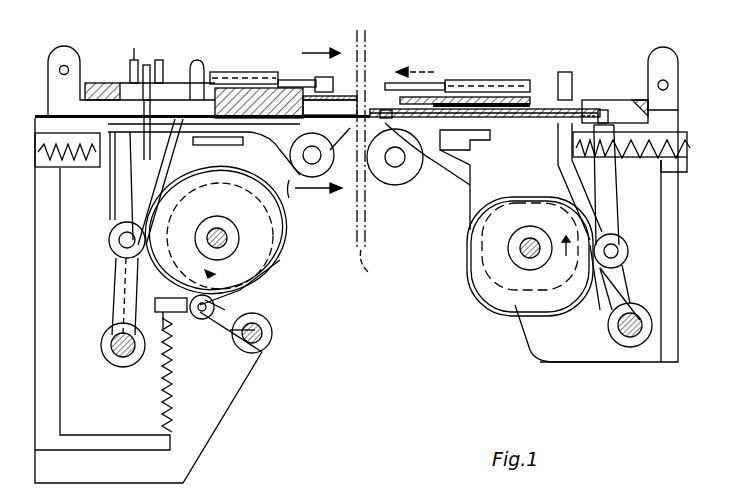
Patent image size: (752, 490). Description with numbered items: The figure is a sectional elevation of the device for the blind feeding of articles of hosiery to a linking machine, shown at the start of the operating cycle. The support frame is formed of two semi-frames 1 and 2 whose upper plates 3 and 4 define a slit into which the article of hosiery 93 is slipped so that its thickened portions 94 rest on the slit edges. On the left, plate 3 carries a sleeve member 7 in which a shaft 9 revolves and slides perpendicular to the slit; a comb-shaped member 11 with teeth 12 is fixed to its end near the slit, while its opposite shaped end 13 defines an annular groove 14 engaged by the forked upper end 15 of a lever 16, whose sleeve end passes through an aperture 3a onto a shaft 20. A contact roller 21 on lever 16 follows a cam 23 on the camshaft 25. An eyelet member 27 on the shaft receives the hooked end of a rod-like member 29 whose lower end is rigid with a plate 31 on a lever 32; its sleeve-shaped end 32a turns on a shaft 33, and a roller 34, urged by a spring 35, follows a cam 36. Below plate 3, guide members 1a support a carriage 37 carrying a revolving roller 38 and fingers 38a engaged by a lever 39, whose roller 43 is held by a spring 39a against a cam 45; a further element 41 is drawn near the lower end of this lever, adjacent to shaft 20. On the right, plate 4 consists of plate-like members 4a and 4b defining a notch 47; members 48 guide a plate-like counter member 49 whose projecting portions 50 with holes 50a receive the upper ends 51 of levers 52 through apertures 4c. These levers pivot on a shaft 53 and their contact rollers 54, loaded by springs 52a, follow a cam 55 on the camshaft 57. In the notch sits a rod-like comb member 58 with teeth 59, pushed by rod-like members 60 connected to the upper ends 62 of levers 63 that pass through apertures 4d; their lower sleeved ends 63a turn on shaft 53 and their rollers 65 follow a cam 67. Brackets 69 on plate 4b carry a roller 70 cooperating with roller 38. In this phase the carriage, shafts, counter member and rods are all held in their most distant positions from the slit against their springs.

The semi-frame 1 is at (205, 454).
The guide member 1a is at (238, 146).
The semi-frame 2 is at (520, 342).
The upper plate 3 is at (245, 90).
The aperture 3a is at (122, 90).
The upper plate 4 is at (530, 70).
The plate-like member 4a is at (465, 96).
The plate-like member 4b is at (478, 142).
The aperture 4c is at (634, 72).
The aperture 4d is at (622, 124).
The sleeve member 7 is at (236, 72).
The shaft 9 is at (295, 80).
The comb-shaped member 11 is at (326, 40).
The teeth 12 is at (336, 80).
The shaped end 13 is at (132, 60).
The annular groove 14 is at (146, 65).
The forked upper end 15 is at (162, 66).
The lever 16 is at (140, 158).
The shaft 20 is at (118, 360).
The revolving contact roller 21 is at (108, 242).
The cam 23 is at (167, 170).
The camshaft 25 is at (227, 232).
The eyelet member 27 is at (200, 62).
The rod-like member 29 is at (200, 146).
The plate 31 is at (190, 316).
The lever 32 is at (255, 303).
The sleeve-shaped end 32a is at (274, 336).
The shaft 33 is at (258, 350).
The revolving contact roller 34 is at (203, 320).
The spring 35 is at (175, 406).
The cam 36 is at (288, 231).
The carriage 37 is at (202, 81).
The revolving roller 38 is at (315, 196).
The depending portions or fingers 38a is at (112, 212).
The lever 39 is at (112, 296).
The spring 39a is at (104, 170).
The roller 41 is at (101, 350).
The revolving contact roller 43 is at (112, 270).
The cam 45 is at (276, 262).
The notch 47 is at (440, 83).
The members 48 is at (500, 78).
The plate-like counter member 49 is at (415, 54).
The projecting portion 50 is at (622, 100).
The hole 50a is at (562, 72).
The upper end 51 is at (574, 76).
The lever 52 is at (558, 176).
The spring 52a is at (628, 249).
The shaft 53 is at (612, 330).
The contact roller 54 is at (552, 310).
The cam 55 is at (468, 266).
The camshaft 57 is at (522, 246).
The rod-like comb member 58 is at (427, 156).
The teeth 59 is at (346, 143).
The rod-like member 60 is at (535, 125).
The upper end 62 is at (608, 160).
The lever 63 is at (618, 220).
The lower sleeved end 63a is at (634, 348).
The contact roller 65 is at (620, 254).
The cam 67 is at (480, 290).
The bracket 69 is at (459, 190).
The roller 70 is at (390, 186).
The article of hosiery 93 is at (377, 268).
The thickened portion 94 is at (366, 42).